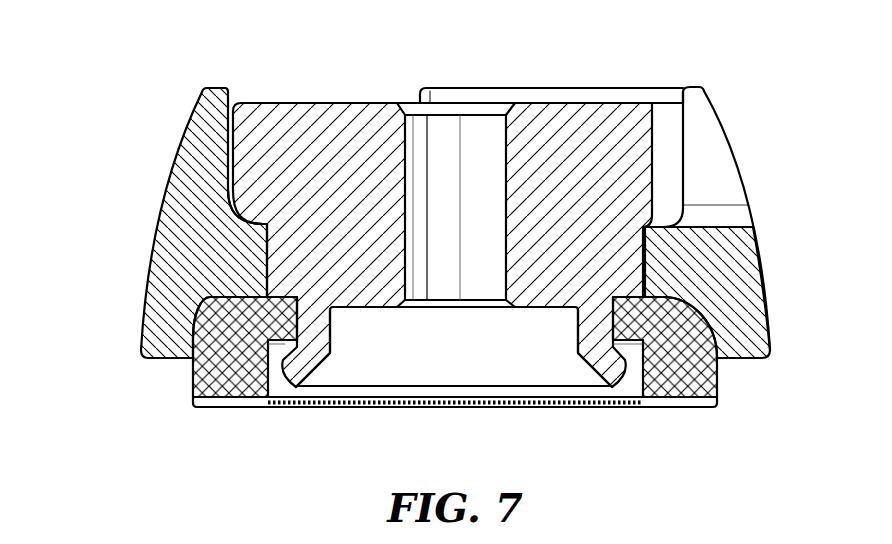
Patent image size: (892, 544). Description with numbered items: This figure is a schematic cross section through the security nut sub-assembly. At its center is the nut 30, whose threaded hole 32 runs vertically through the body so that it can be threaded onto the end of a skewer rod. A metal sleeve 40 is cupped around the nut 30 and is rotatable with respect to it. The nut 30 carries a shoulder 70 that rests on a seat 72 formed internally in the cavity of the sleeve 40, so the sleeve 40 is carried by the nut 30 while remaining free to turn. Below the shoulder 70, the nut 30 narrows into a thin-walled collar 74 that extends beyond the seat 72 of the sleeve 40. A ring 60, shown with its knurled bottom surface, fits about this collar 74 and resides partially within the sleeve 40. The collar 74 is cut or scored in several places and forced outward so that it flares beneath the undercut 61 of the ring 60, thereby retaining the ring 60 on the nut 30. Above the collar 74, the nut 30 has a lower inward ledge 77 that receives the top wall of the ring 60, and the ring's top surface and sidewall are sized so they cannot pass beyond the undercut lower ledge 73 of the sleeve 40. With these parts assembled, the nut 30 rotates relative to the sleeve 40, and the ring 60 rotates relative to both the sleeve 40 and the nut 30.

The nut 30 is at (340, 157).
The threaded hole 32 is at (483, 168).
The sleeve 40 is at (707, 145).
The ring 60 is at (192, 400).
The undercut 61 is at (285, 344).
The shoulder 70 is at (240, 223).
The seat 72 is at (263, 227).
The undercut lower ledge 73 is at (188, 352).
The collar 74 is at (578, 354).
The lower inward ledge 77 is at (628, 293).